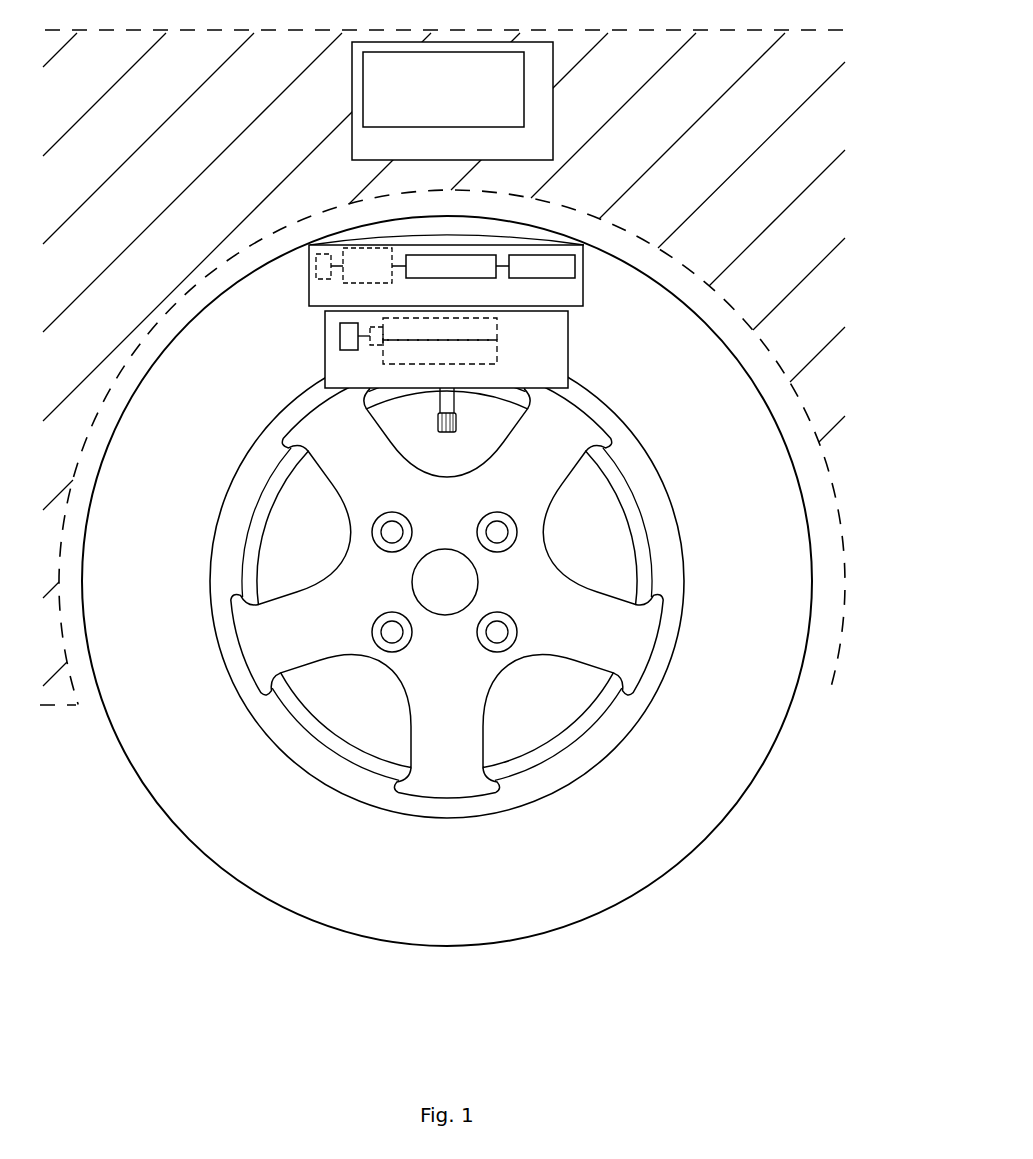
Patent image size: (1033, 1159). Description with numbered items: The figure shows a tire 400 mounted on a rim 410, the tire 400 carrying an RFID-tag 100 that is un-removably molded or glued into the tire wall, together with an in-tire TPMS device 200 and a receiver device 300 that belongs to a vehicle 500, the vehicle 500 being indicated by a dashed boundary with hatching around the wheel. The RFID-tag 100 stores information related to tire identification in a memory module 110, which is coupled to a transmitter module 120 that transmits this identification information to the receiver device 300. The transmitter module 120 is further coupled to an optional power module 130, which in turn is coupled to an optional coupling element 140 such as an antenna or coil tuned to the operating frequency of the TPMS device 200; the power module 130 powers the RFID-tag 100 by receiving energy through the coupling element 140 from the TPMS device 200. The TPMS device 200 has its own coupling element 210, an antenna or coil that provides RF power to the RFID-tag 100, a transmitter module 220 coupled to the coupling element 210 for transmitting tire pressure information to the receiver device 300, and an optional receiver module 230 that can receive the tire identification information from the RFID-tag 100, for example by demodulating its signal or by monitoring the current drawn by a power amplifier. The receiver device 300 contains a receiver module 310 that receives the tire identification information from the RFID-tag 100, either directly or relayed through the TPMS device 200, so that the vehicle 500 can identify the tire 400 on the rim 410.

The RFID-tag 100 is at (441, 289).
The memory module 110 is at (517, 279).
The transmitter module 120 is at (428, 279).
The power module 130 is at (352, 283).
The coupling element 140 is at (312, 268).
The TPMS device 200 is at (446, 349).
The coupling element 210 is at (325, 340).
The transmitter module 220 is at (497, 328).
The receiver module 230 is at (497, 352).
The receiver device 300 is at (476, 116).
The receiver module 310 is at (483, 127).
The tire 400 is at (695, 845).
The rim 410 is at (612, 735).
The vehicle 500 is at (830, 690).